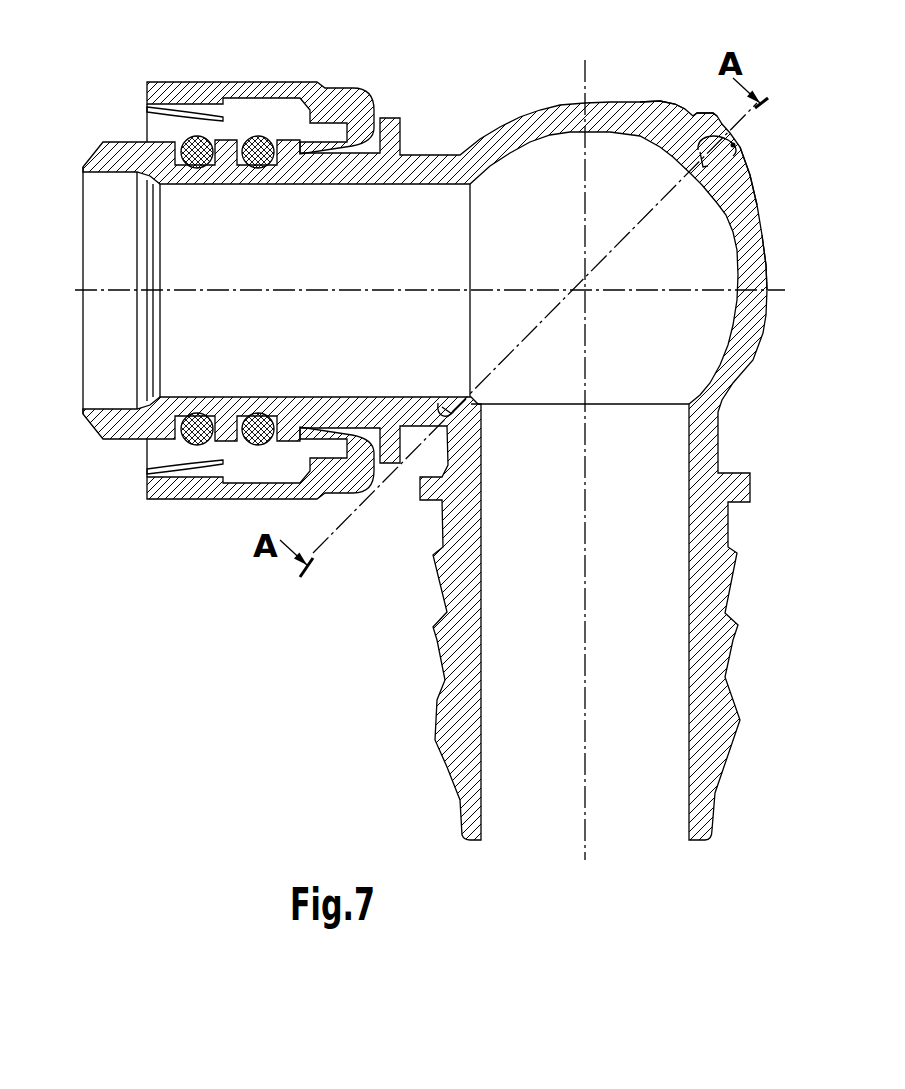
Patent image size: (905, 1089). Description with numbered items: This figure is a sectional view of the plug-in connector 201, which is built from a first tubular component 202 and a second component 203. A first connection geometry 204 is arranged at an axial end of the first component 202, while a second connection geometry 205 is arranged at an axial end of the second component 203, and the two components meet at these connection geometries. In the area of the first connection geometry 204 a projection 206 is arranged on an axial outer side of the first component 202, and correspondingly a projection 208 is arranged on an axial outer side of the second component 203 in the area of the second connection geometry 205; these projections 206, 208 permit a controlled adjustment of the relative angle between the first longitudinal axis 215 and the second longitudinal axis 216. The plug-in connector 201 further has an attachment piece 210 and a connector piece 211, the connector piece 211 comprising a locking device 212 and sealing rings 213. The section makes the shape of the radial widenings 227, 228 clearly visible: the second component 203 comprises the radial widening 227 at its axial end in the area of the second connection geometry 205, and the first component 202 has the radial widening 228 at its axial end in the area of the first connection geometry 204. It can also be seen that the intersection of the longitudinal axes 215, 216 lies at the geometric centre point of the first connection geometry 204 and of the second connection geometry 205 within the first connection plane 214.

The plug-in connector 201 is at (472, 90).
The first component 202 is at (707, 462).
The second component 203 is at (428, 175).
The first connection geometry 204 is at (747, 148).
The second connection geometry 205 is at (710, 110).
The projection 206 is at (748, 185).
The projection 208 is at (670, 120).
The attachment piece 210 is at (430, 730).
The connector piece 211 is at (285, 73).
The locking device 212 is at (192, 92).
The sealing rings 213 is at (230, 443).
The first connection plane 214 is at (357, 523).
The first longitudinal axis 215 is at (587, 785).
The second longitudinal axis 216 is at (112, 290).
The radial widening 227 is at (553, 107).
The radial widening 228 is at (755, 253).